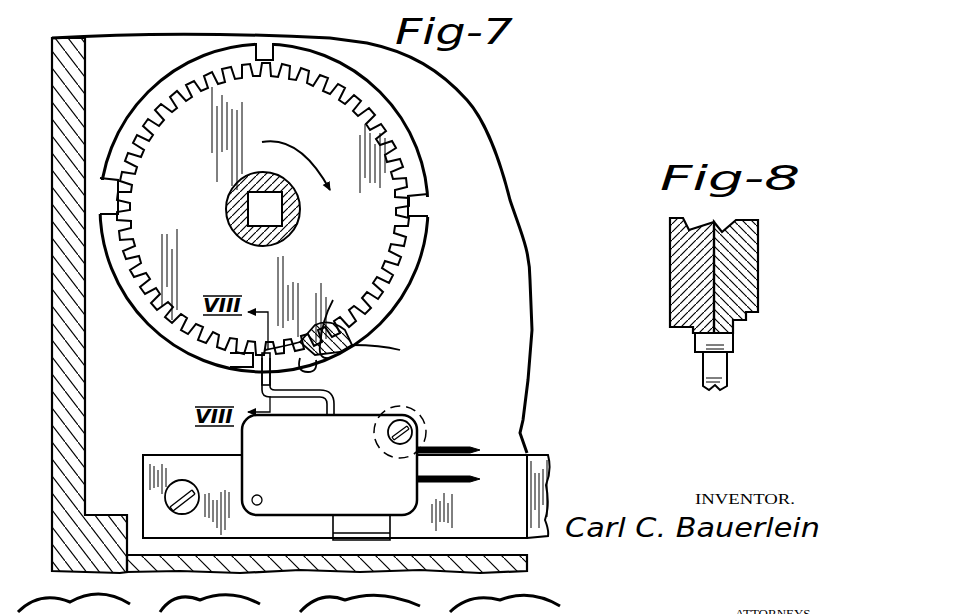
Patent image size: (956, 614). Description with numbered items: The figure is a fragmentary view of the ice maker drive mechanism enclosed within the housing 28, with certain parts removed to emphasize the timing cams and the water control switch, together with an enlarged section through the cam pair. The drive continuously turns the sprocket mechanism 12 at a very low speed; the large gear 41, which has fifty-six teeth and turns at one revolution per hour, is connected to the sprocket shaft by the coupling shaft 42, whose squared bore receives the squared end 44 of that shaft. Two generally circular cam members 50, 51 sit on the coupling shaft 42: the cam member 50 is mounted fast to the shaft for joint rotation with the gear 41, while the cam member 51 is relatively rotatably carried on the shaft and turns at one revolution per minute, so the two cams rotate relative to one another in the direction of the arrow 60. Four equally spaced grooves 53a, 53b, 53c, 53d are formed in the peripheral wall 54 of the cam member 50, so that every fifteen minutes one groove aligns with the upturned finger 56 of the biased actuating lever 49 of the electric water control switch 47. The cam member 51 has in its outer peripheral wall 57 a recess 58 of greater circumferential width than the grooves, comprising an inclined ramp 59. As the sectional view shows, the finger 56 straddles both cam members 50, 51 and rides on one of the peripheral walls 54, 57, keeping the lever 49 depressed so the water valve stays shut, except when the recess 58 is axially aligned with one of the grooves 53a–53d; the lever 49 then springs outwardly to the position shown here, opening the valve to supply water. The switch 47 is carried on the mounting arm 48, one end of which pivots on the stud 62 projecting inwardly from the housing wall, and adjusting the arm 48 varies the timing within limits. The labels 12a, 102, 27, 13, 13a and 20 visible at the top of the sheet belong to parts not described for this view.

In FIG. 7, the frame portion 12a is at (38, 11).
In FIG. 7, the sprocket mechanism 12 is at (162, 8).
In FIG. 7, the housing part 102 is at (208, 15).
In FIG. 7, the shaft 27 is at (590, 15).
In FIG. 7, the plate 13 is at (654, 17).
In FIG. 7, the plate portion 13a is at (718, 13).
In FIG. 7, the member 20 is at (762, 11).
In FIG. 7, the housing 28 is at (50, 372).
In FIG. 7, the gear 41 is at (395, 272).
In FIG. 7, the coupling shaft 42 is at (248, 236).
In FIG. 7, the squared end 44 is at (255, 207).
In FIG. 7, the electric water control switch 47 is at (338, 495).
In FIG. 7, the mounting arm 48 is at (527, 462).
In FIG. 7, the actuating lever 49 is at (305, 396).
In FIG. 7, the cam member 50 is at (372, 102).
In FIG. 8, the cam member 50 is at (688, 266).
In FIG. 7, the cam member 51 is at (350, 340).
In FIG. 8, the cam member 51 is at (748, 265).
In FIG. 7, the groove 53a is at (245, 363).
In FIG. 7, the groove 53b is at (428, 203).
In FIG. 7, the groove 53c is at (266, 42).
In FIG. 7, the groove 53d is at (100, 188).
In FIG. 7, the peripheral wall 54 is at (402, 126).
In FIG. 7, the upturned finger 56 is at (262, 384).
In FIG. 8, the upturned finger 56 is at (718, 370).
In FIG. 7, the outer peripheral wall 57 is at (340, 352).
In FIG. 7, the recess 58 is at (320, 372).
In FIG. 7, the ramp 59 is at (330, 320).
In FIG. 7, the arrow 60 is at (296, 156).
In FIG. 7, the stud 62 is at (182, 480).